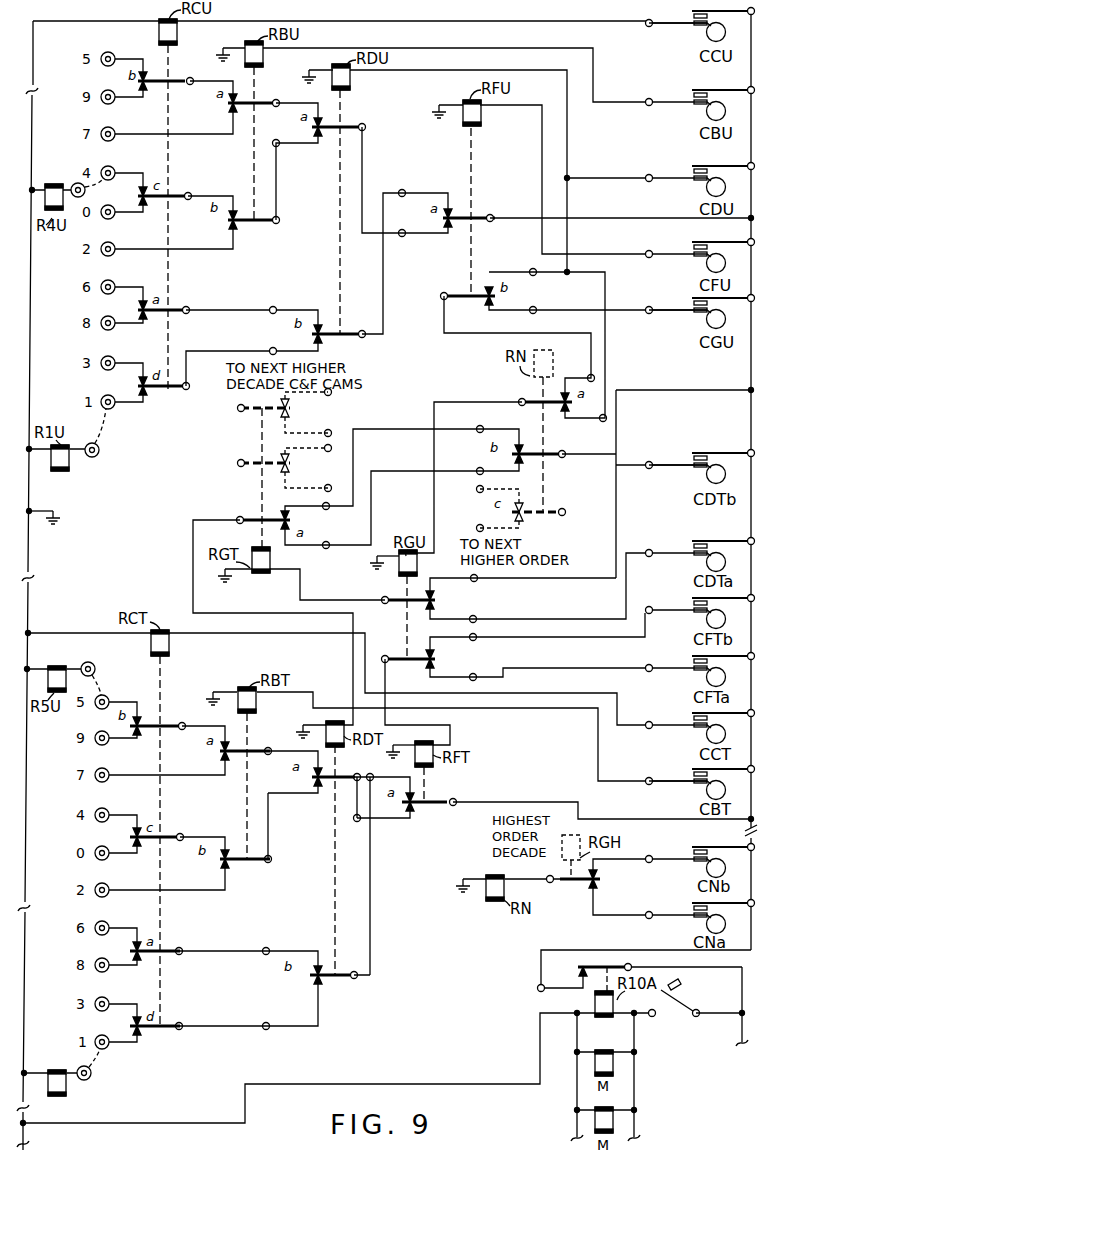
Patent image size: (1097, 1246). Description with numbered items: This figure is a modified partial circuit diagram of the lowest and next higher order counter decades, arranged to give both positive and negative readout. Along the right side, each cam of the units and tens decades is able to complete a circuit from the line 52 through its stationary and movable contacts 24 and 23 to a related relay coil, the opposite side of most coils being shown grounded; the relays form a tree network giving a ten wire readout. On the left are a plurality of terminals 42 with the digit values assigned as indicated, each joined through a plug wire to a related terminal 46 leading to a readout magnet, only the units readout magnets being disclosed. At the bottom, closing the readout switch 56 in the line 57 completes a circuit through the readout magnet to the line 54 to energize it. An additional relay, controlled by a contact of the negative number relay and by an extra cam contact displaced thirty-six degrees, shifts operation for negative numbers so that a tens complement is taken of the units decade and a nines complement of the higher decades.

The movable contact 23 is at (669, 27).
The stationary contact 24 is at (698, 14).
The terminal 42 is at (113, 102).
The terminal 46 is at (86, 668).
The line 52 is at (32, 90).
The line 54 is at (742, 1002).
The readout switch 56 is at (681, 1013).
The line 57 is at (274, 1087).